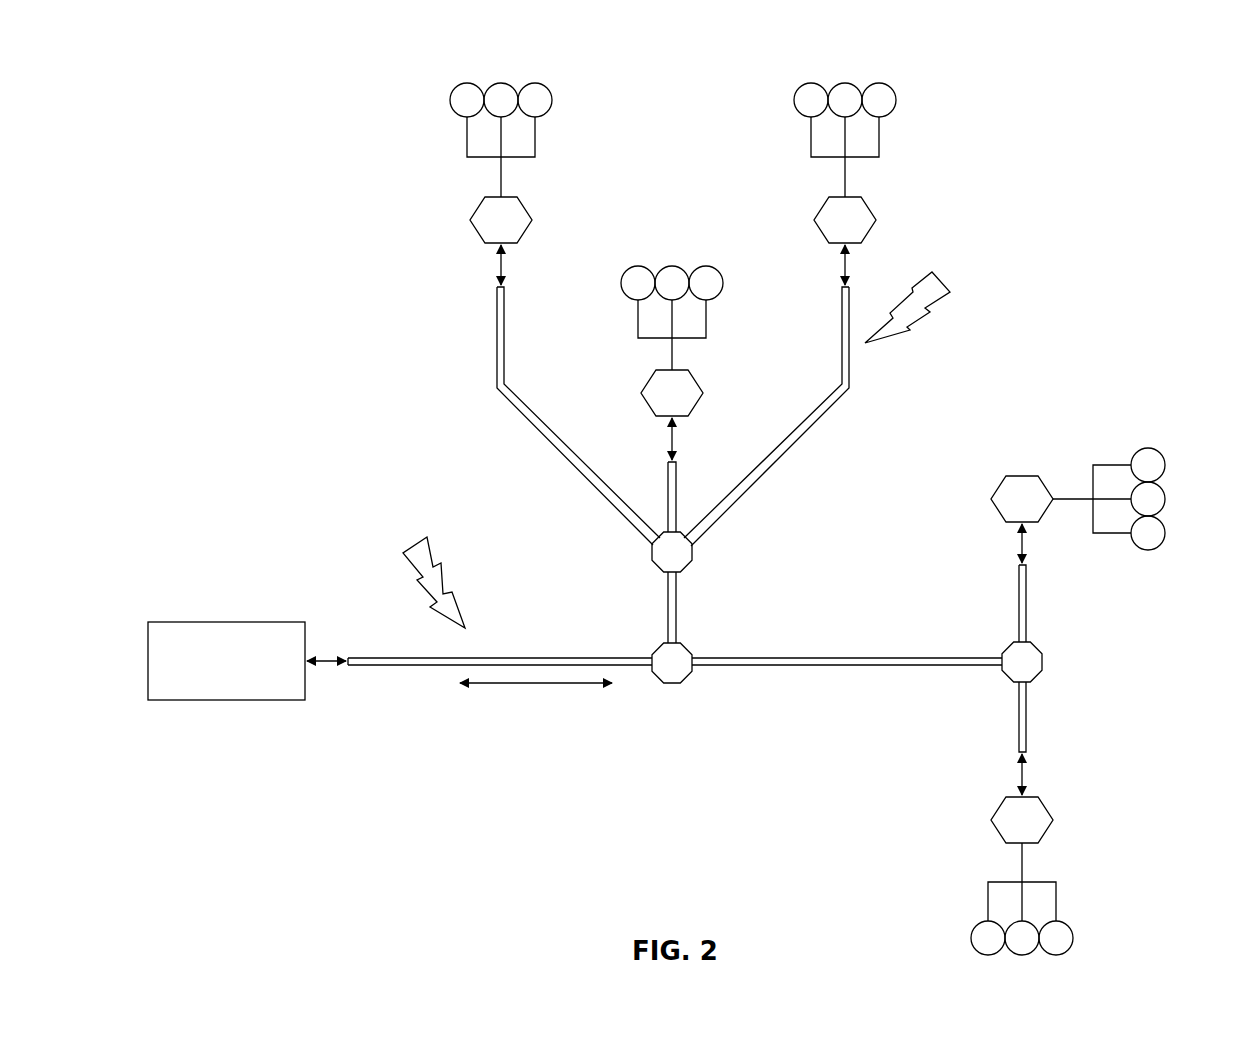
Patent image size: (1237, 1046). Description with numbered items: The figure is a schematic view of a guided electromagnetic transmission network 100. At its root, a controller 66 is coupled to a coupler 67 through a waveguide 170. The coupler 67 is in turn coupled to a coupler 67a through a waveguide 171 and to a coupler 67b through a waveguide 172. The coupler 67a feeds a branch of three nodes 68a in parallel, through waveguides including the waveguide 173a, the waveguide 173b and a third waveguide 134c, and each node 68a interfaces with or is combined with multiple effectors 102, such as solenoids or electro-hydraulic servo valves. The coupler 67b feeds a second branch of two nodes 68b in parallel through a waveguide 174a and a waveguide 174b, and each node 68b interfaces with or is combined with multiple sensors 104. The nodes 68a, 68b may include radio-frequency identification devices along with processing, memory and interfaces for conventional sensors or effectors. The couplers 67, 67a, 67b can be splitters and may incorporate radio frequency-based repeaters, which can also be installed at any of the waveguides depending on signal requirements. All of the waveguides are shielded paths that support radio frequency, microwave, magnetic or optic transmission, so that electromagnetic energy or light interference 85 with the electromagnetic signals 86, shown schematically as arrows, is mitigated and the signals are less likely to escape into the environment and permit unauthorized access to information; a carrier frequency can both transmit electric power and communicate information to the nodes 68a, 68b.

The guided electromagnetic transmission network 100 is at (300, 90).
The controller 66 is at (243, 675).
The waveguide 170 is at (375, 666).
The electromagnetic signals 86 is at (540, 686).
The coupler 67 is at (672, 684).
The waveguide 172 is at (815, 666).
The waveguide 171 is at (667, 600).
The coupler 67a is at (690, 565).
The waveguide 173a is at (496, 332).
The waveguide 173b is at (667, 470).
The conduit 134c is at (765, 474).
The waveguide 174a is at (1018, 600).
The coupler 67b is at (1043, 660).
The waveguide 174b is at (1018, 730).
The node 68a is at (528, 212).
The effectors 102 is at (540, 103).
The node 68b is at (1023, 476).
The sensors 104 is at (1150, 448).
The electromagnetic energy or light interference 85 is at (418, 542).